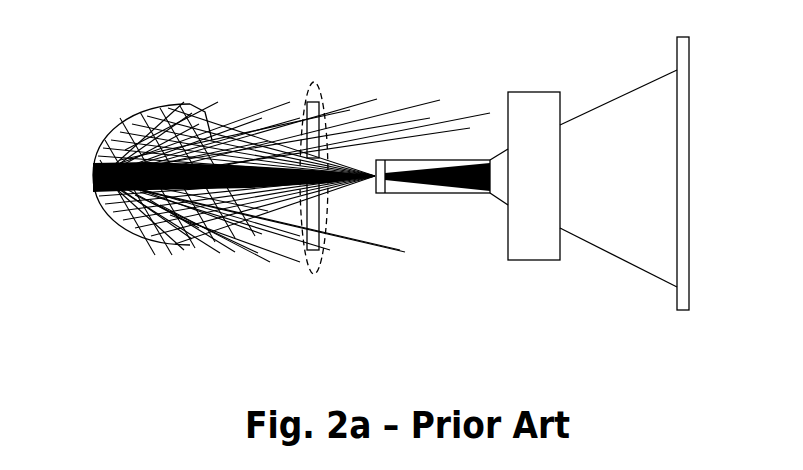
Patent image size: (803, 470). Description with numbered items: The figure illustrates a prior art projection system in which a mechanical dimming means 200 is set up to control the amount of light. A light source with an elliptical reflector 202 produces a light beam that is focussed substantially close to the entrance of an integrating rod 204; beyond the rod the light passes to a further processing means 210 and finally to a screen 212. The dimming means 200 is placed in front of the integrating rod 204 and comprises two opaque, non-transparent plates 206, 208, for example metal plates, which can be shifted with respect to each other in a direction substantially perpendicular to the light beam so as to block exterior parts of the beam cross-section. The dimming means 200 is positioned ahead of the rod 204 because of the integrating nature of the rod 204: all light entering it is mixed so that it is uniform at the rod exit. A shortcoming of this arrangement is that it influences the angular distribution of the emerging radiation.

The dimming means 200 is at (311, 92).
The elliptical reflector 202 is at (108, 158).
The integrating rod 204 is at (442, 169).
The opaque plate 206 is at (318, 103).
The opaque plate 208 is at (318, 248).
The further processing means 210 is at (546, 262).
The screen 212 is at (679, 297).